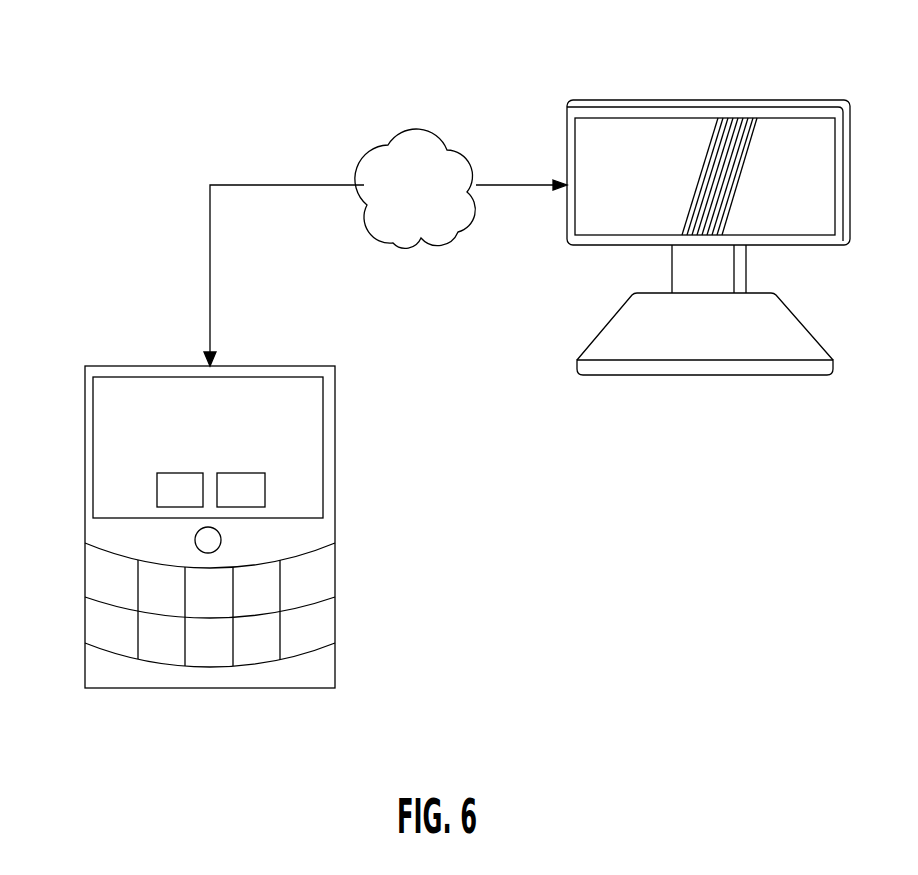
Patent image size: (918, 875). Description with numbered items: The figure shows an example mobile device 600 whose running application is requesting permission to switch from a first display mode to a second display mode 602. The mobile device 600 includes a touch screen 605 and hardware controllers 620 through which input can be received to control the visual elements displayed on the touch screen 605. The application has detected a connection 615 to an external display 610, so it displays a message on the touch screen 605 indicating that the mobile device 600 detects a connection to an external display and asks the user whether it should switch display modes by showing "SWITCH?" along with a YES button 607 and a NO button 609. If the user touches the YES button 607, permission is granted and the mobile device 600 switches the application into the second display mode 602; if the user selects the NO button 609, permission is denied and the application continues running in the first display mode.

The mobile device 600 is at (222, 552).
The second display mode 602 is at (398, 40).
The touch screen 605 is at (333, 423).
The YES button 607 is at (157, 495).
The NO button 609 is at (265, 495).
The external display 610 is at (713, 376).
The connection 615 is at (409, 129).
The hardware controllers 620 is at (222, 541).